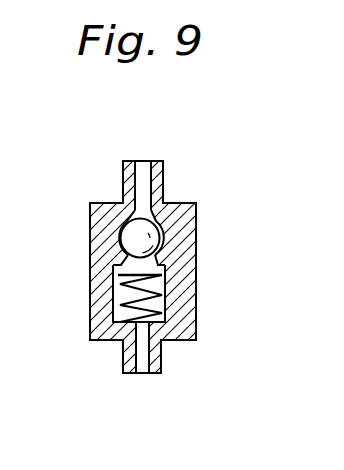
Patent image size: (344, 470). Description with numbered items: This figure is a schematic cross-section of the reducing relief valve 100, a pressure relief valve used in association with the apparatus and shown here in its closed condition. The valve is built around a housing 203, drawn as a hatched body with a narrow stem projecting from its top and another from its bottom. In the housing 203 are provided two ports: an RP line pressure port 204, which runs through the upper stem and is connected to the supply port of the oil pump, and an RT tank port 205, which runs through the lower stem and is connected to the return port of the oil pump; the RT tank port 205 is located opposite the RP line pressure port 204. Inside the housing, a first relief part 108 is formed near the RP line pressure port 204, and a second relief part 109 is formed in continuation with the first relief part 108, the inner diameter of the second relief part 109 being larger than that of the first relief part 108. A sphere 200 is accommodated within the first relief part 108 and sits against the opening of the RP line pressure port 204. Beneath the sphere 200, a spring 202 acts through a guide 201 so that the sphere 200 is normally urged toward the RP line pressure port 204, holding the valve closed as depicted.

The reducing relief valve 100 is at (90, 166).
The first relief part 108 is at (121, 230).
The second relief part 109 is at (120, 258).
The sphere 200 is at (127, 238).
The guide 201 is at (167, 270).
The spring 202 is at (160, 321).
The housing 203 is at (182, 342).
The RP line pressure port 204 is at (143, 163).
The RT tank port 205 is at (142, 373).